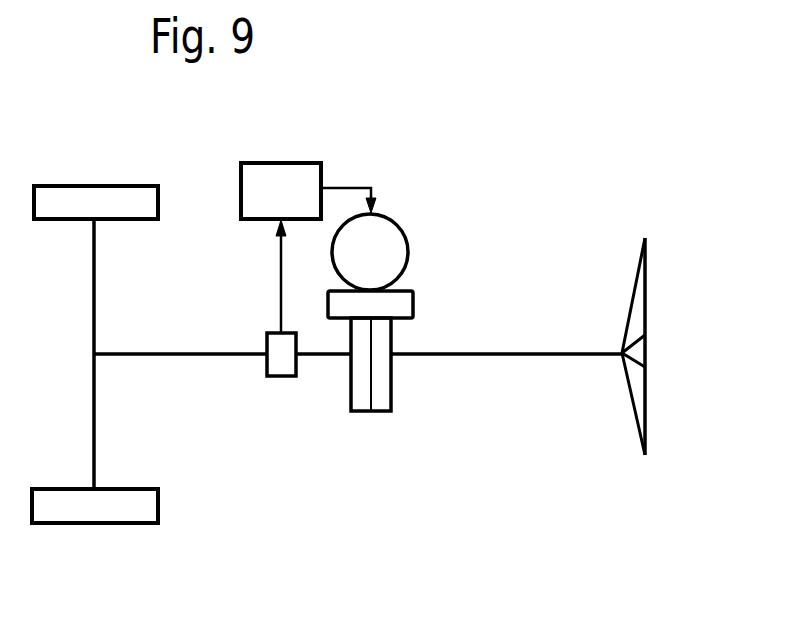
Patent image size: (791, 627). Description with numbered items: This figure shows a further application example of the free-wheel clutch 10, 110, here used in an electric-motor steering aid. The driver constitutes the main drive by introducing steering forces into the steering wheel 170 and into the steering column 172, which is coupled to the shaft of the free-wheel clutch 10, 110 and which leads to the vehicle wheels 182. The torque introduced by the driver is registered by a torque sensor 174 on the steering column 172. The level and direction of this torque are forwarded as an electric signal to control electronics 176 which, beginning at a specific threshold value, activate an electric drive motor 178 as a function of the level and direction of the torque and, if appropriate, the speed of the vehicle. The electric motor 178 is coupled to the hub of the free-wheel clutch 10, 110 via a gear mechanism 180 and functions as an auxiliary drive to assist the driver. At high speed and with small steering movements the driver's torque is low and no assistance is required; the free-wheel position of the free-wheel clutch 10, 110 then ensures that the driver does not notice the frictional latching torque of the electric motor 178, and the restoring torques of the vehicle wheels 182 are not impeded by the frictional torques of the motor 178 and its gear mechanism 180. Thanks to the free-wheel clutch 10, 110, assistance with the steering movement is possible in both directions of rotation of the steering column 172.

The steering wheel 170 is at (645, 402).
The steering column 172 is at (198, 352).
The torque sensor 174 is at (278, 362).
The control electronics 176 is at (300, 180).
The electric drive motor 178 is at (401, 245).
The gear mechanism 180 is at (401, 302).
The vehicle wheels 182 is at (78, 202).
The free-wheel clutch 10 is at (363, 397).
The free-wheel clutch 110 is at (371, 364).